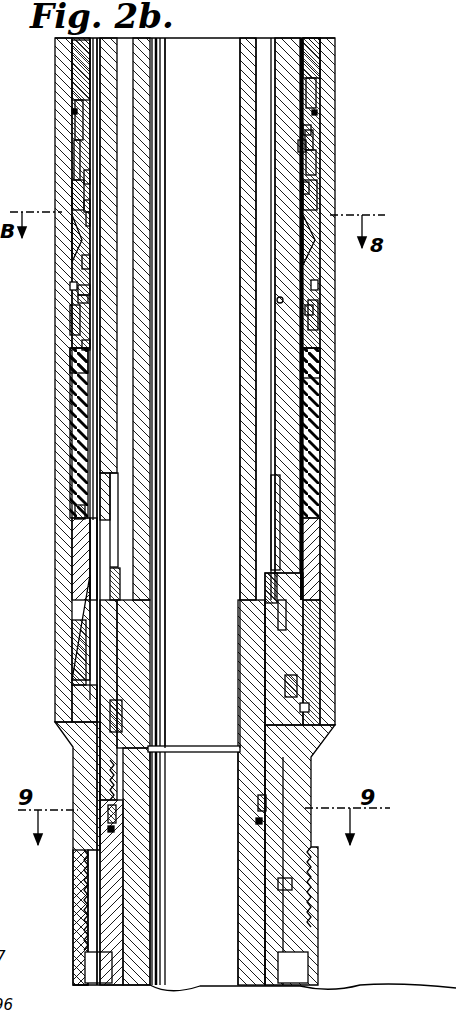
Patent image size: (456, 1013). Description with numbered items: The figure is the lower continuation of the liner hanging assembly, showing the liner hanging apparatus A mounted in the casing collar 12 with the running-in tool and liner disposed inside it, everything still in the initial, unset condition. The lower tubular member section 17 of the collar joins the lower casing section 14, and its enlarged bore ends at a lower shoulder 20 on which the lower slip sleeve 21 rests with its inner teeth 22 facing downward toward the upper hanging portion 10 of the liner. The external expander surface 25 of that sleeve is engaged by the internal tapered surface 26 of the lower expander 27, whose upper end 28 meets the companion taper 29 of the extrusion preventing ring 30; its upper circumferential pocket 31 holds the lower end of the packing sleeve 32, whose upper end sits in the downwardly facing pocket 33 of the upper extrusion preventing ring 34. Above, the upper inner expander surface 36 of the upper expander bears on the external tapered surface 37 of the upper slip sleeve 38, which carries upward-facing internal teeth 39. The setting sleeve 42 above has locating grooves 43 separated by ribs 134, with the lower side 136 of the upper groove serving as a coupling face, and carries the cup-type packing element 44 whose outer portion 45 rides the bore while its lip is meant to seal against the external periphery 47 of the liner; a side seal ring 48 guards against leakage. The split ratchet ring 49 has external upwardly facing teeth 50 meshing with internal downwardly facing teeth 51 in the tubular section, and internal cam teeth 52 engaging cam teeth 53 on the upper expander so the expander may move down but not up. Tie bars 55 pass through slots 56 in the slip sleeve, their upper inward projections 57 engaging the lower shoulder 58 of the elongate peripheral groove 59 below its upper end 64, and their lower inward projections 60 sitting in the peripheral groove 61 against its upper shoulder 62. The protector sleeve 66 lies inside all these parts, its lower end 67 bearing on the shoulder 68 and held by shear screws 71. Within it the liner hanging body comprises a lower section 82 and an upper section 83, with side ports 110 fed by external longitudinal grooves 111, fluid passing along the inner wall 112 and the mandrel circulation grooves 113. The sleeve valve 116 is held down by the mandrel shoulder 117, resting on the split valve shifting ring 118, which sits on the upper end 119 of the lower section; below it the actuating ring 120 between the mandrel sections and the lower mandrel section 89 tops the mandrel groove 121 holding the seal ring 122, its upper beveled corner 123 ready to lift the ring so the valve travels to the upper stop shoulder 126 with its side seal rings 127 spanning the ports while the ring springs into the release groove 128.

The upper hanging portion of the liner 10 is at (318, 392).
The casing collar 12 is at (54, 437).
The lower casing section 14 is at (313, 937).
The lower tubular member section 17 is at (330, 455).
The lower shoulder 20 is at (85, 688).
The lower slip sleeve 21 is at (72, 655).
The inner teeth 22 is at (295, 668).
The external expander surface 25 is at (313, 645).
The internal tapered surface 26 is at (85, 615).
The lower expander 27 is at (80, 588).
The upper end of lower expander 28 is at (300, 523).
The companion taper 29 is at (86, 532).
The extrusion preventing ring 30 is at (312, 520).
The upper circumferential pocket 31 is at (80, 515).
The packing sleeve 32 is at (72, 400).
The downwardly facing pocket 33 is at (78, 366).
The upper extrusion preventing ring 34 is at (82, 345).
The upper inner expander surface 36 is at (85, 263).
The external tapered surface 37 is at (73, 238).
The upper slip sleeve 38 is at (85, 208).
The internal teeth 39 is at (87, 218).
The setting sleeve 42 is at (300, 132).
The locating grooves 43 is at (312, 93).
The packing element 44 is at (318, 44).
The outer portion of packing element 45 is at (73, 50).
The external periphery of liner portion 47 is at (295, 265).
The side seal ring 48 is at (73, 112).
The split ratchet ring 49 is at (70, 320).
The external upwardly facing teeth 50 is at (310, 300).
The internal downwardly facing teeth 51 is at (320, 370).
The internal cam teeth 52 is at (318, 310).
The cam teeth 53 is at (312, 297).
The tie bars 55 is at (312, 192).
The slots 56 is at (80, 198).
The upper inward projections 57 is at (88, 178).
The lower shoulder 58 is at (305, 188).
The elongate peripheral groove 59 is at (78, 162).
The lower inward projections 60 is at (70, 286).
The peripheral groove 61 is at (80, 297).
The upper shoulder 62 is at (80, 290).
The upper end of setting sleeve groove 64 is at (76, 127).
The protector sleeve 66 is at (302, 65).
The lower end of protector sleeve 67 is at (92, 715).
The shoulder 68 is at (295, 735).
The shear screws 71 is at (305, 708).
The lower section of liner hanging body 82 is at (275, 968).
The upper section of liner hanging body 83 is at (310, 147).
The lower mandrel section 89 is at (130, 967).
The side ports 110 is at (100, 556).
The external longitudinal grooves 111 is at (97, 755).
The inner wall of liner hanging body 112 is at (315, 318).
The external circulation grooves 113 is at (245, 428).
The sleeve valve 116 is at (288, 643).
The mandrel shoulder 117 is at (118, 578).
The valve shifting ring 118 is at (115, 718).
The upper end of lower liner hanging section 119 is at (118, 738).
The actuating ring 120 is at (268, 812).
The mandrel groove 121 is at (112, 830).
The seal ring 122 is at (110, 825).
The upper beveled corner 123 is at (110, 792).
The upper stop shoulder 126 is at (115, 471).
The side seal rings 127 is at (270, 572).
The release groove 128 is at (282, 612).
The ribs 134 is at (88, 122).
The lower side of upper lock groove 136 is at (298, 148).
The liner hanging apparatus A is at (338, 131).